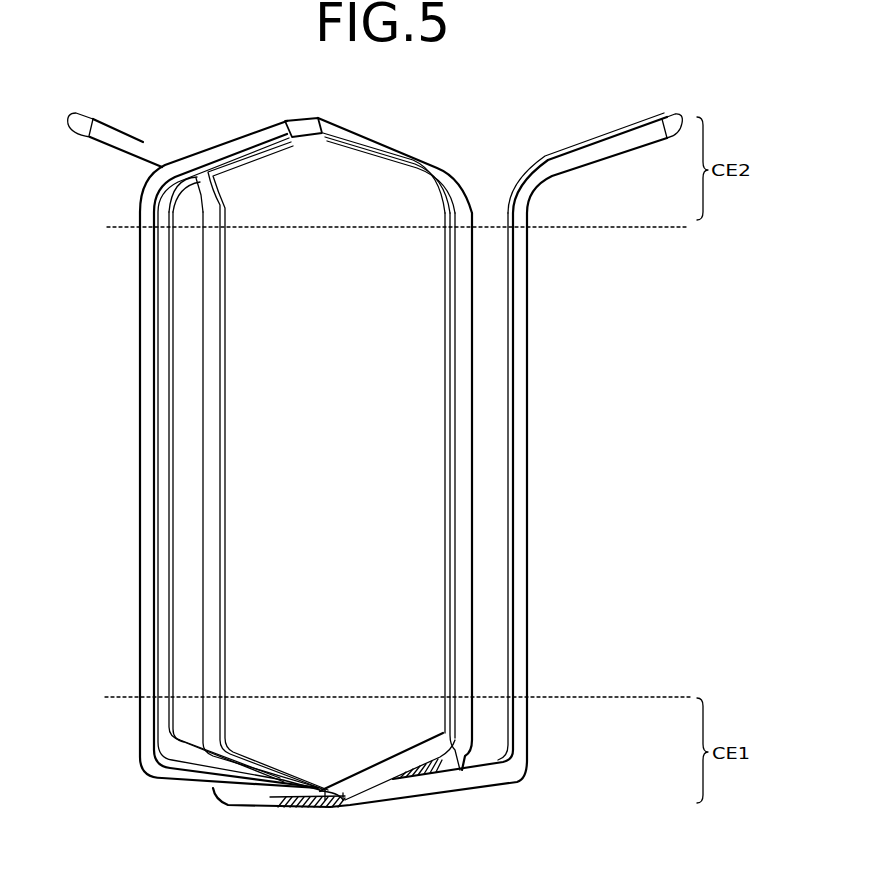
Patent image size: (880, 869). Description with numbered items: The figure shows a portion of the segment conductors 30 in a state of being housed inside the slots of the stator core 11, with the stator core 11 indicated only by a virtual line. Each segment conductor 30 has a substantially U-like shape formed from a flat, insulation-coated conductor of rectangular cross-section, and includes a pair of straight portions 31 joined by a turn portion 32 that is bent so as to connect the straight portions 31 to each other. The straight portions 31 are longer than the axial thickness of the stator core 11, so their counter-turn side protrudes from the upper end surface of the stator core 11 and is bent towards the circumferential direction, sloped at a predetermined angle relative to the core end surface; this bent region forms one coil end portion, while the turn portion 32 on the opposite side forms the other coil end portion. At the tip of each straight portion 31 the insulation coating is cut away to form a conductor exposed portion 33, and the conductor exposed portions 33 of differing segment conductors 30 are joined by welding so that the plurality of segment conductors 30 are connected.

The stator core 11 is at (115, 227).
The segment conductor 30 is at (208, 146).
The straight portion 31 is at (467, 312).
The turn portion 32 is at (373, 777).
The conductor exposed portion 33 is at (293, 118).